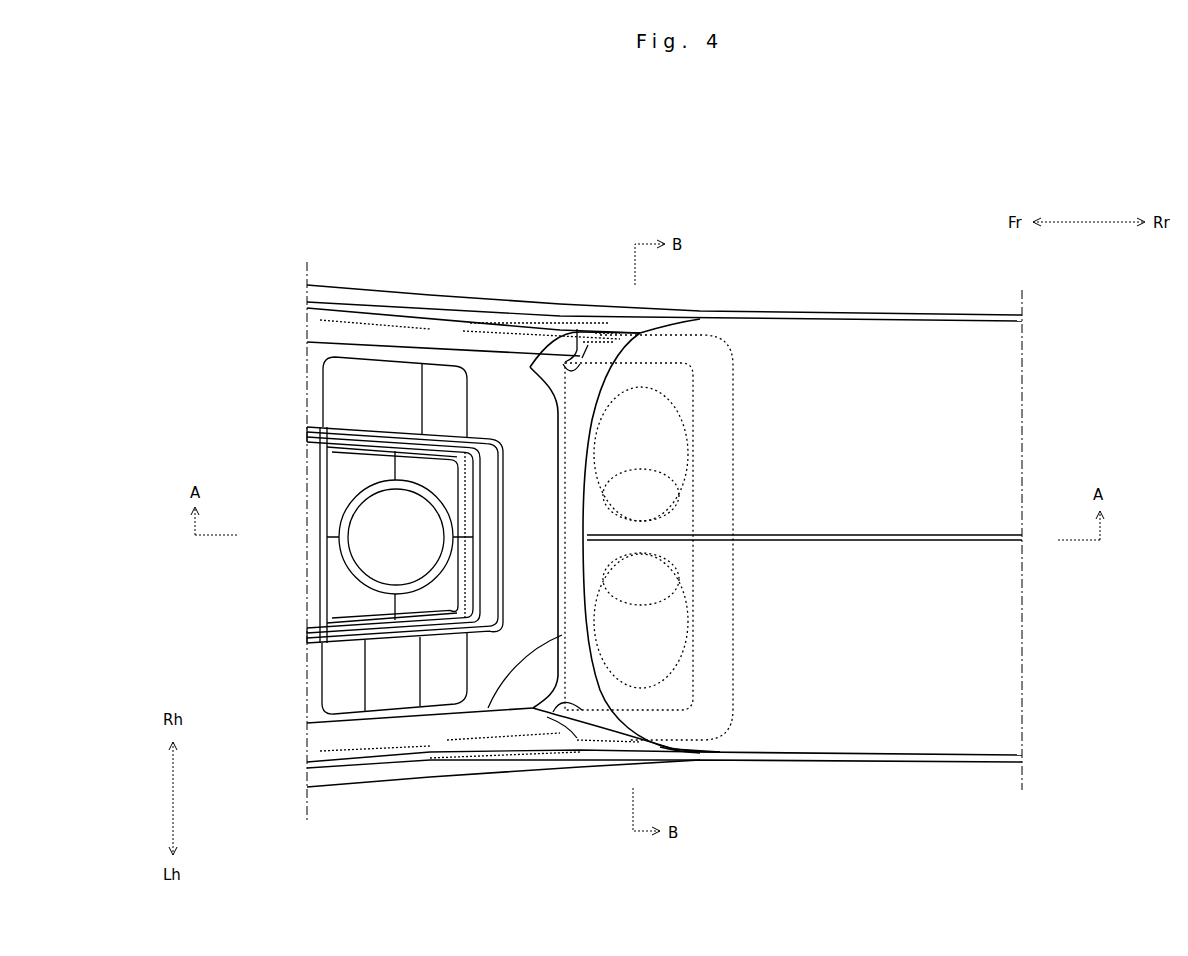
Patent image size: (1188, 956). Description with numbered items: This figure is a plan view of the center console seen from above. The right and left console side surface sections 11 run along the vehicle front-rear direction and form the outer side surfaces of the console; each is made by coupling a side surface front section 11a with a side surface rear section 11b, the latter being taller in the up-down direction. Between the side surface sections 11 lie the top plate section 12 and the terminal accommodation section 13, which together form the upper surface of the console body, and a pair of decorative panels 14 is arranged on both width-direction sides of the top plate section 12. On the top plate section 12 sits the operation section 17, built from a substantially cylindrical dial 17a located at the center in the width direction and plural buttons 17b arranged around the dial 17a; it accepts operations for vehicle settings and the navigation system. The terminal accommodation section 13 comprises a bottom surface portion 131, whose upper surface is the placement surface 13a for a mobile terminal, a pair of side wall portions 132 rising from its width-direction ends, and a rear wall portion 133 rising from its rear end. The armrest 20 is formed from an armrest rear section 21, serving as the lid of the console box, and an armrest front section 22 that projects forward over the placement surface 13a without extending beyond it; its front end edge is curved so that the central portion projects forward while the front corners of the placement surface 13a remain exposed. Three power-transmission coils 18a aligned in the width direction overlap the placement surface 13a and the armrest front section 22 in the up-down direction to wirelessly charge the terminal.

The console side surface section 11 is at (642, 537).
The side surface front section 11a is at (336, 292).
The side surface rear section 11b is at (893, 313).
The top plate section 12 is at (448, 717).
The terminal accommodation section 13 is at (579, 545).
The placement surface 13a is at (540, 642).
The bottom surface portion 131 is at (493, 747).
The side wall portion 132 is at (560, 362).
The rear wall portion 133 is at (740, 491).
The decorative panel 14 is at (396, 340).
The operation section 17 is at (359, 535).
The dial 17a is at (375, 555).
The button 17b is at (335, 405).
The power-transmission coil 18a is at (684, 418).
The armrest 20 is at (673, 748).
The armrest rear section 21 is at (977, 698).
The armrest front section 22 is at (690, 322).